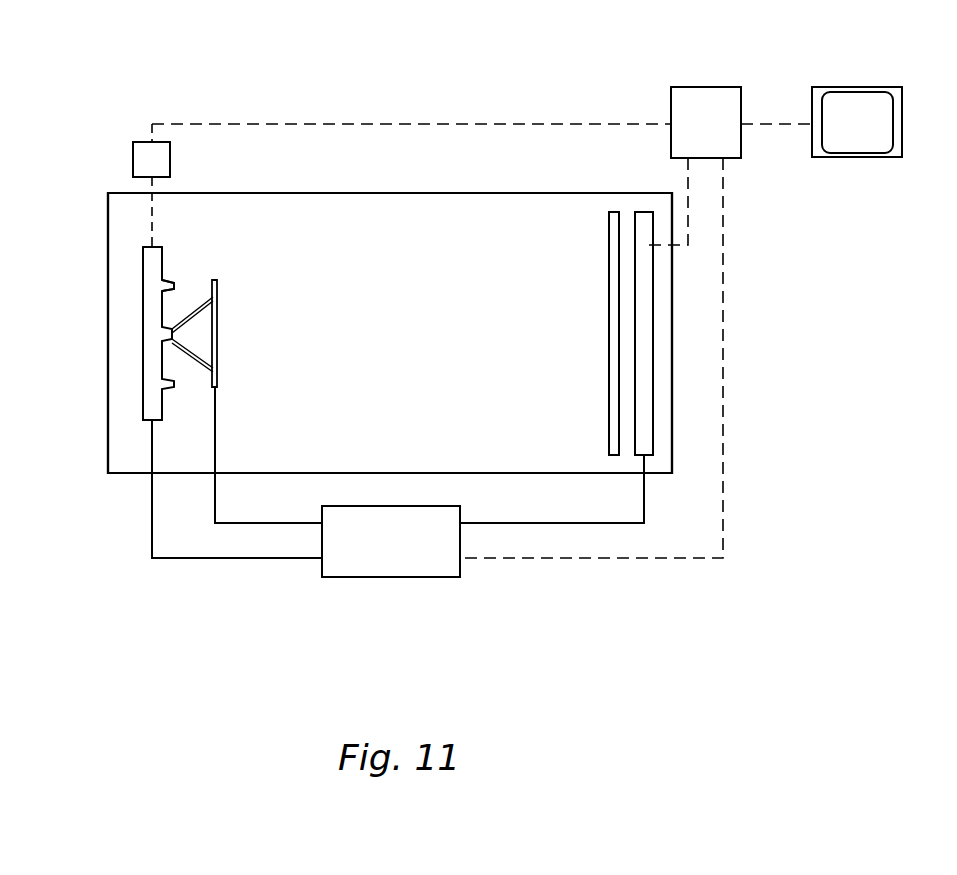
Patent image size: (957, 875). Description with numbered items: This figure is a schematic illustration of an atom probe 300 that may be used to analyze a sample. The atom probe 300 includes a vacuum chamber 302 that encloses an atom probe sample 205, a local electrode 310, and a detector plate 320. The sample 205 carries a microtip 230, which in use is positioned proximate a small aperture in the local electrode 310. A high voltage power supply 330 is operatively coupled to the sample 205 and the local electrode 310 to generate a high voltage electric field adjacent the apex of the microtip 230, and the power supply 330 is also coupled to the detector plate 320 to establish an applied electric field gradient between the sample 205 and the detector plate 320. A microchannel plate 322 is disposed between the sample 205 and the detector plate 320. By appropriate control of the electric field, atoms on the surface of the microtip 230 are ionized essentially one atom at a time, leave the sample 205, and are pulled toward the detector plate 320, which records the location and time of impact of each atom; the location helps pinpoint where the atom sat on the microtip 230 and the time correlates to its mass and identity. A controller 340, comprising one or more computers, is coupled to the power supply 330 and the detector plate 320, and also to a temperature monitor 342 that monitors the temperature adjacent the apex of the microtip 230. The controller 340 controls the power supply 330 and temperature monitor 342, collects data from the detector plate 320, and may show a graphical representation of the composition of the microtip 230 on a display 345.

The atom probe 300 is at (478, 104).
The vacuum chamber 302 is at (108, 283).
The atom probe sample 205 is at (142, 405).
The microtip 230 is at (170, 289).
The local electrode 310 is at (217, 297).
The temperature monitor 342 is at (171, 159).
The controller 340 is at (714, 87).
The display 345 is at (860, 87).
The microchannel plate 322 is at (609, 272).
The detector plate 320 is at (653, 330).
The high voltage power supply 330 is at (370, 578).